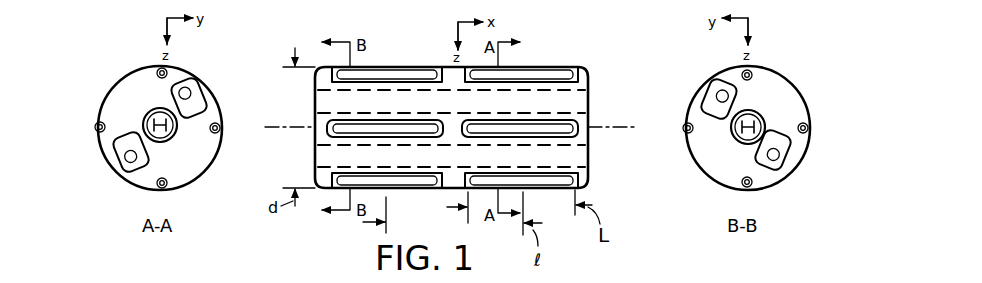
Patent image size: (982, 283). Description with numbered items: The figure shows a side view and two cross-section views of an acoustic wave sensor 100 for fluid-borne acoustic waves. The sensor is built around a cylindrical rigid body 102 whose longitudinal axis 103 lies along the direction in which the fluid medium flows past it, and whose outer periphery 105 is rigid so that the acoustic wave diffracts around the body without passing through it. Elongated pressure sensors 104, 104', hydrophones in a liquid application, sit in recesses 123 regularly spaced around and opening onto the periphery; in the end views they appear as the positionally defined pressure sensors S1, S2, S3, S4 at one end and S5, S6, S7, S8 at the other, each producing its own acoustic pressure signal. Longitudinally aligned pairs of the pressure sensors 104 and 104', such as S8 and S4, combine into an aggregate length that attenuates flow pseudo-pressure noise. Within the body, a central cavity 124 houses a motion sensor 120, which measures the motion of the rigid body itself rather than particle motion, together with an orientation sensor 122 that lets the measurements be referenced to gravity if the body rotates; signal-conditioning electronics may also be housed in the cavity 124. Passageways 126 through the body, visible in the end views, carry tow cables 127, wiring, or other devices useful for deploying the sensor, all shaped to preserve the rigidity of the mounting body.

The acoustic wave sensor 100 is at (597, 45).
The rigid body 102 is at (128, 83).
The longitudinal axis 103 is at (300, 125).
The pressure sensor 104 is at (315, 118).
The pressure sensor 104' is at (595, 114).
The outer periphery 105 is at (790, 168).
The motion sensor 120 is at (167, 137).
The orientation sensor 122 is at (157, 111).
The recess 123 is at (588, 72).
The central cavity 124 is at (177, 122).
The passageway 126 is at (205, 95).
The tow cable 127 is at (124, 160).
The pressure sensor position 1 S1 is at (682, 134).
The pressure sensor position 2 S2 is at (752, 72).
The pressure sensor position 3 S3 is at (807, 132).
The pressure sensor position 4 S4 is at (752, 184).
The pressure sensor position 5 S5 is at (222, 130).
The pressure sensor position 6 S6 is at (170, 72).
The pressure sensor position 7 S7 is at (97, 132).
The pressure sensor position 8 S8 is at (168, 189).